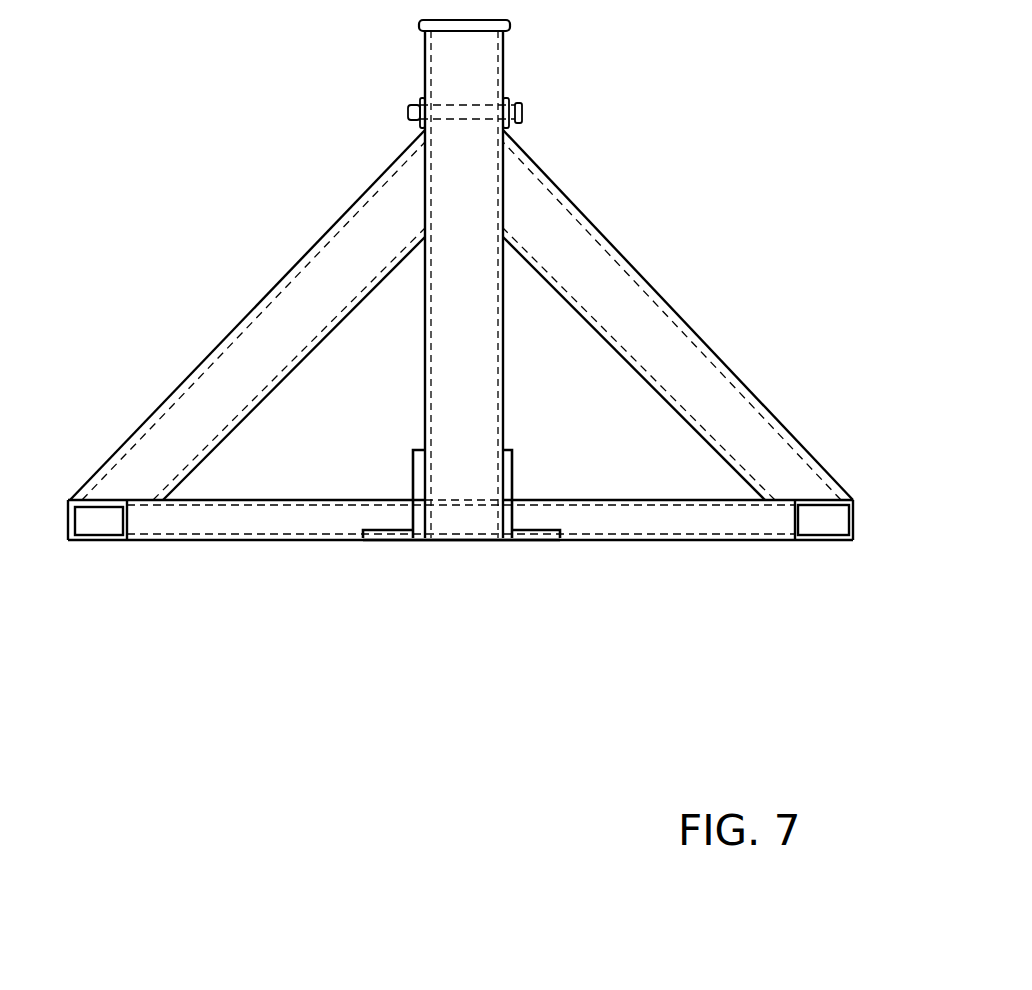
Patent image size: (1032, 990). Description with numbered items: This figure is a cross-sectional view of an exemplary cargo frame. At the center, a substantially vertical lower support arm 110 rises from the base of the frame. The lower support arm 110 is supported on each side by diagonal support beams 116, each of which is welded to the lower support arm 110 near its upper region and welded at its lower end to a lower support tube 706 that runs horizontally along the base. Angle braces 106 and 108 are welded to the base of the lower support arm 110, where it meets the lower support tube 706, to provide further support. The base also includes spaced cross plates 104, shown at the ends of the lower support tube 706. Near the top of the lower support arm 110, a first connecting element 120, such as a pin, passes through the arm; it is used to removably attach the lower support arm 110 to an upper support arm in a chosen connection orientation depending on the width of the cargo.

The cross plate 104 is at (467, 550).
The angle brace 106 is at (452, 565).
The angle brace 108 is at (477, 525).
The lower support arm 110 is at (551, 279).
The support beam 116 is at (461, 315).
The first connecting element 120 is at (561, 101).
The lower support tube 706 is at (460, 559).